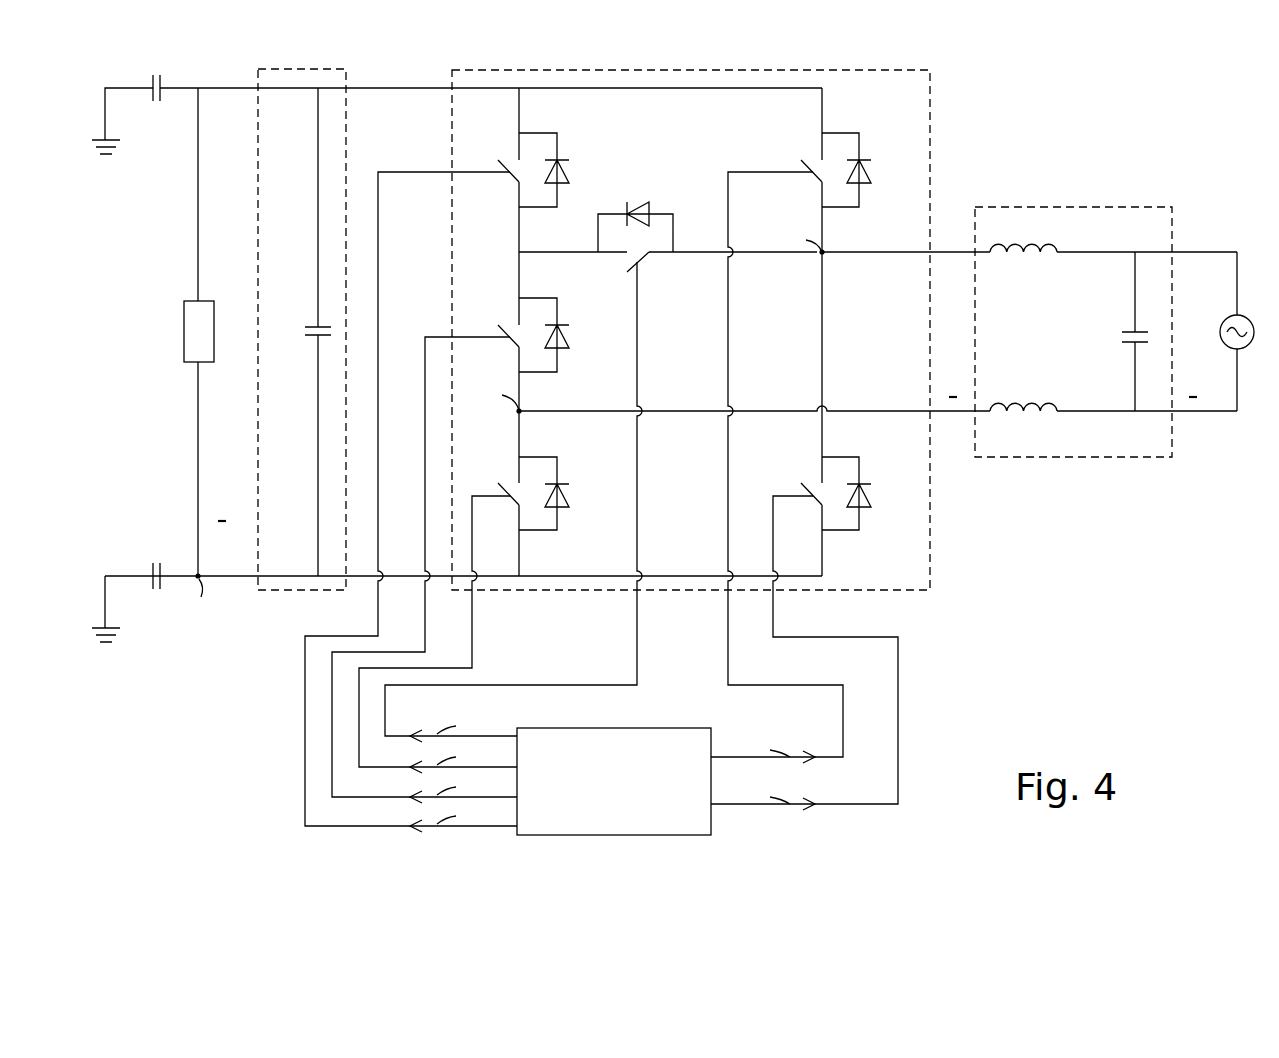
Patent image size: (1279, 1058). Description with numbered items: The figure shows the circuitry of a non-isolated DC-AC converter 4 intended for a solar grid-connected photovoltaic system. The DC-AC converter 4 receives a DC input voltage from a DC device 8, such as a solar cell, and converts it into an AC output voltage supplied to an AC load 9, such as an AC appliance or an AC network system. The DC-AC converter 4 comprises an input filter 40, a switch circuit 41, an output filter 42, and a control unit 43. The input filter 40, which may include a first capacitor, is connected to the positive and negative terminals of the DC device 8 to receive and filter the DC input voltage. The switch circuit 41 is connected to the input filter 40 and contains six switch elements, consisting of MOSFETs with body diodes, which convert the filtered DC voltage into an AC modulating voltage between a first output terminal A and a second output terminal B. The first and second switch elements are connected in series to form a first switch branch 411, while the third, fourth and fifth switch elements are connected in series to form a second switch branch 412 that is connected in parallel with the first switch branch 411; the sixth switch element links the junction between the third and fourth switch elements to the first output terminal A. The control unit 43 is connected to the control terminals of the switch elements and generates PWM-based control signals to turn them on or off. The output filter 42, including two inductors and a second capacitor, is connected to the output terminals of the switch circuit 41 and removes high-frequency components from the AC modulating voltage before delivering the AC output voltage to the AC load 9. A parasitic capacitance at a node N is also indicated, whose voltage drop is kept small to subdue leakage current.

The DC-AC converter 4 is at (1197, 131).
The DC device 8 is at (184, 330).
The AC load 9 is at (1243, 317).
The input filter 40 is at (258, 73).
The switch circuit 41 is at (931, 100).
The first switch branch 411 is at (745, 141).
The second switch branch 412 is at (586, 141).
The output filter 42 is at (1083, 207).
The control unit 43 is at (686, 714).